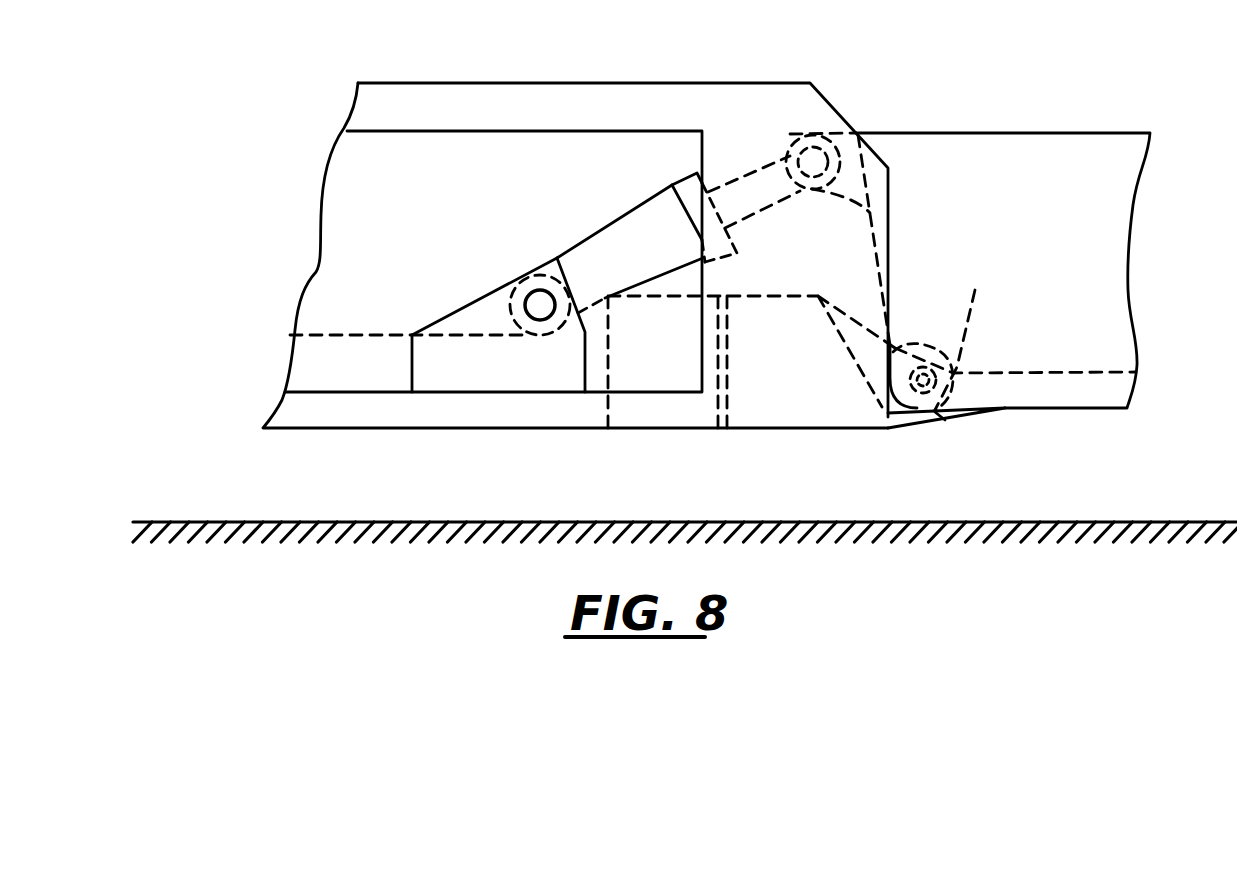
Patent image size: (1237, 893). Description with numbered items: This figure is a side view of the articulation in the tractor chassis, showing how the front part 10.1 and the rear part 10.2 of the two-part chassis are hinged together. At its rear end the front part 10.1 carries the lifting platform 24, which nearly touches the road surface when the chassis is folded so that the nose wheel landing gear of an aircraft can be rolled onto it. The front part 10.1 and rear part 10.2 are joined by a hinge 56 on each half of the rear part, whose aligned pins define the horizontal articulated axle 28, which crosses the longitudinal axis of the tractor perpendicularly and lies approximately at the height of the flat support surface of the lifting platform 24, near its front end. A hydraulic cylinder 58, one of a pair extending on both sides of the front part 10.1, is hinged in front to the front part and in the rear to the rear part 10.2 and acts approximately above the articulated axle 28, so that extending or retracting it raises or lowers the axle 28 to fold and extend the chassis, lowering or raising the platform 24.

The front part 10.1 is at (403, 272).
The rear part 10.2 is at (1087, 203).
The hydraulic cylinder 58 is at (592, 230).
The hinge 56 is at (921, 333).
The lifting platform 24 is at (985, 427).
The articulated axle 28 is at (940, 420).